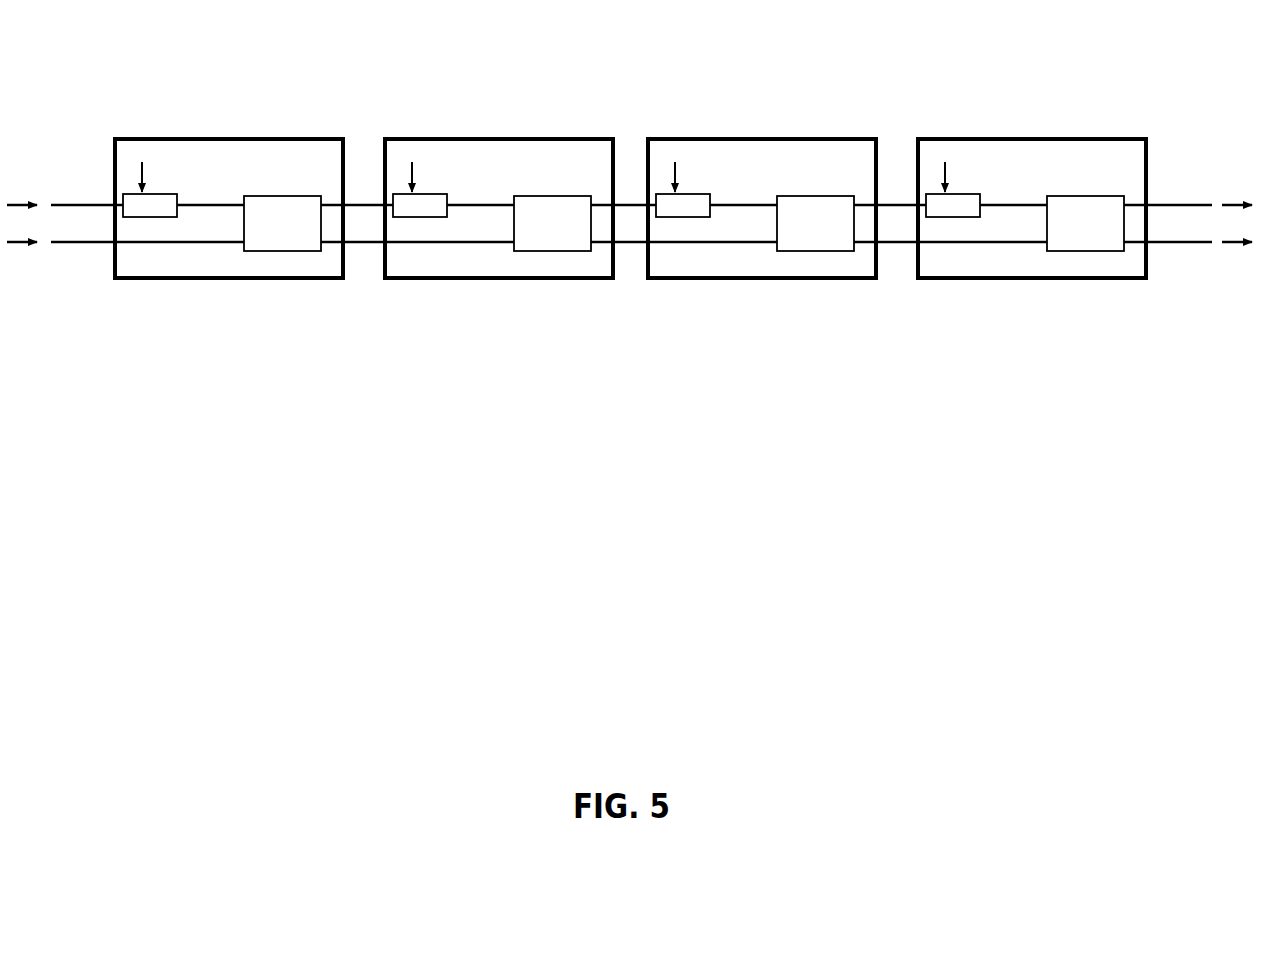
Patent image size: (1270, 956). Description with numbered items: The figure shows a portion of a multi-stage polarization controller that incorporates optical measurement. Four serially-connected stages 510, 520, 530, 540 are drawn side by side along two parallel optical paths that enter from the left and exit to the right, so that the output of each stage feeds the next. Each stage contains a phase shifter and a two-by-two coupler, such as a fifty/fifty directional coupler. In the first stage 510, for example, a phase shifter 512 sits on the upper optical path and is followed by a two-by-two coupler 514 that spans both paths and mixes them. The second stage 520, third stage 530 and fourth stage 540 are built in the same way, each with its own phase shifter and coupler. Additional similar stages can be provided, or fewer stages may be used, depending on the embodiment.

The first stage 510 is at (249, 196).
The phase shifter 512 is at (168, 194).
The 2×2 coupler 514 is at (285, 251).
The second stage 520 is at (467, 139).
The third stage 530 is at (729, 139).
The fourth stage 540 is at (1000, 139).